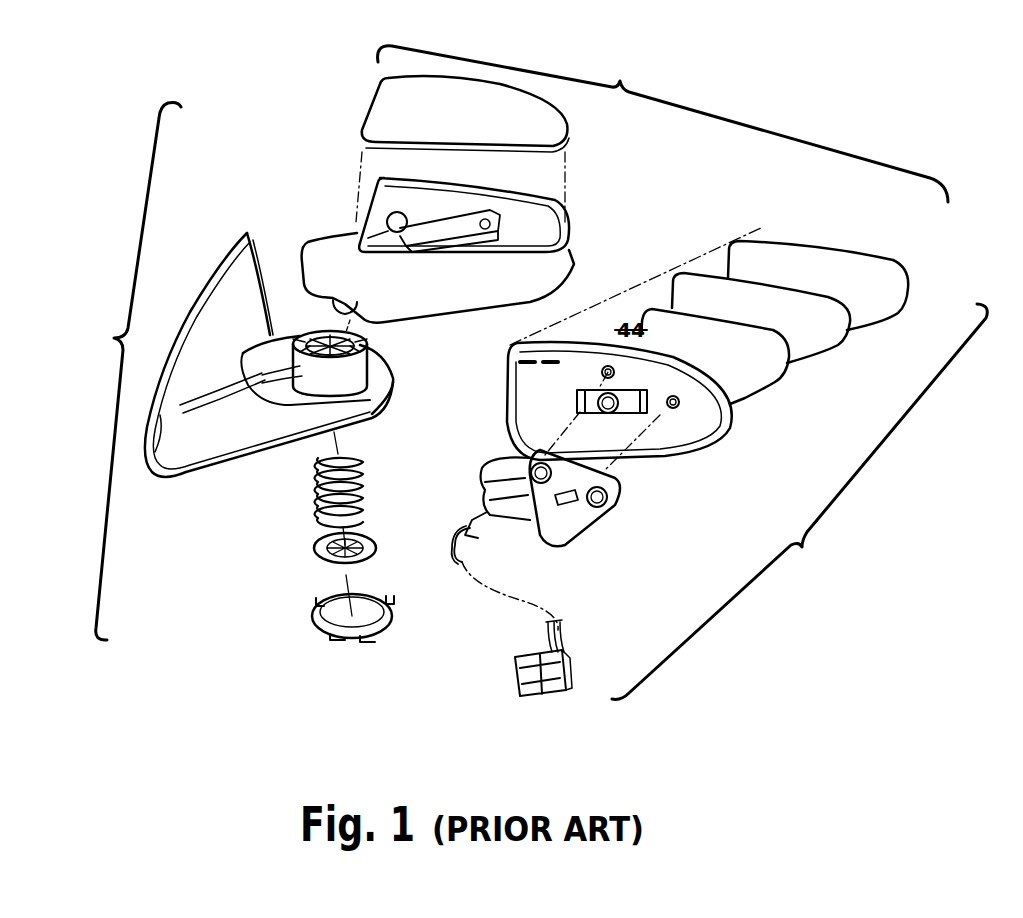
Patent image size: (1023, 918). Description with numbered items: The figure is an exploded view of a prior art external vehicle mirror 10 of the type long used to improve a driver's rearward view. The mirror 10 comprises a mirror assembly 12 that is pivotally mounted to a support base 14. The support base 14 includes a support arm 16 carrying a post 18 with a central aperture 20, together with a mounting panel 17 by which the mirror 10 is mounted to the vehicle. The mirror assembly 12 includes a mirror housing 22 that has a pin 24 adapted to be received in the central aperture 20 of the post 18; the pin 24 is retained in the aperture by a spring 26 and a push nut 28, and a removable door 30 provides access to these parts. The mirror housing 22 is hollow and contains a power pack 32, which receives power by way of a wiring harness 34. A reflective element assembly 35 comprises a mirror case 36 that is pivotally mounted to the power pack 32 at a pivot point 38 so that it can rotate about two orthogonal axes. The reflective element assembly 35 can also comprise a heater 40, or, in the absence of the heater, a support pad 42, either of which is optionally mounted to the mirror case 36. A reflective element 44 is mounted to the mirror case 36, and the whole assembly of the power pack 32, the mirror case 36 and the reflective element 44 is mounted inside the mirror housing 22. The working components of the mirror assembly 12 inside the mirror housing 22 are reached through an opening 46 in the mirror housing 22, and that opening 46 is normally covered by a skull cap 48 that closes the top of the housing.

The vehicle mirror 10 is at (129, 372).
The mirror assembly 12 is at (663, 124).
The support base 14 is at (186, 476).
The support arm 16 is at (258, 420).
The mounting panel 17 is at (208, 283).
The post 18 is at (350, 382).
The central aperture 20 is at (325, 344).
The mirror housing 22 is at (550, 258).
The pin 24 is at (358, 318).
The spring 26 is at (320, 494).
The push nut 28 is at (322, 556).
The removable door 30 is at (318, 615).
The power pack 32 is at (588, 520).
The wiring harness 34 is at (567, 632).
The reflective element assembly 35 is at (799, 501).
The mirror case 36 is at (703, 415).
The pivot point 38 is at (617, 408).
The heater 40 is at (773, 367).
The support pad 42 is at (832, 332).
The reflective element 44 is at (880, 285).
The opening 46 is at (545, 228).
The skull cap 48 is at (545, 131).